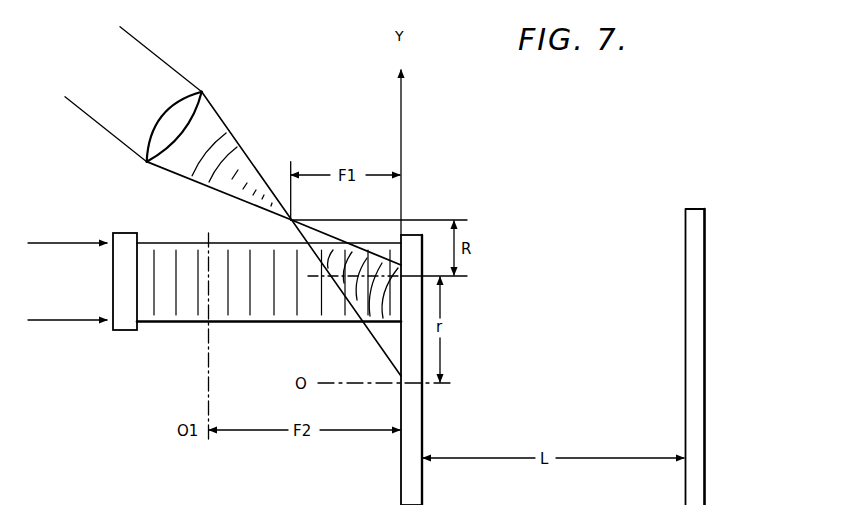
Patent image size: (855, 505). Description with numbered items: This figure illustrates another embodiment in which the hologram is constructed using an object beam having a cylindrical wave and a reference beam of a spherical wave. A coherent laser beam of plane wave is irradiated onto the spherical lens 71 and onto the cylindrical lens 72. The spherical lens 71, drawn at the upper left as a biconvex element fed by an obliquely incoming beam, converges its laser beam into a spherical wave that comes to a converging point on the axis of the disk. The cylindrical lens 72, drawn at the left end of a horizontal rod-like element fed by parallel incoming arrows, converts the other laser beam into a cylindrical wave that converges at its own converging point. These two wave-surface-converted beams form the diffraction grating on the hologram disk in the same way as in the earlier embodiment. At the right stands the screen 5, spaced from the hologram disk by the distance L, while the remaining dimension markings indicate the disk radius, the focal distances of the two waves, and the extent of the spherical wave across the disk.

The spherical lens 71 is at (206, 90).
The cylindrical lens 72 is at (118, 335).
The screen 5 is at (693, 208).